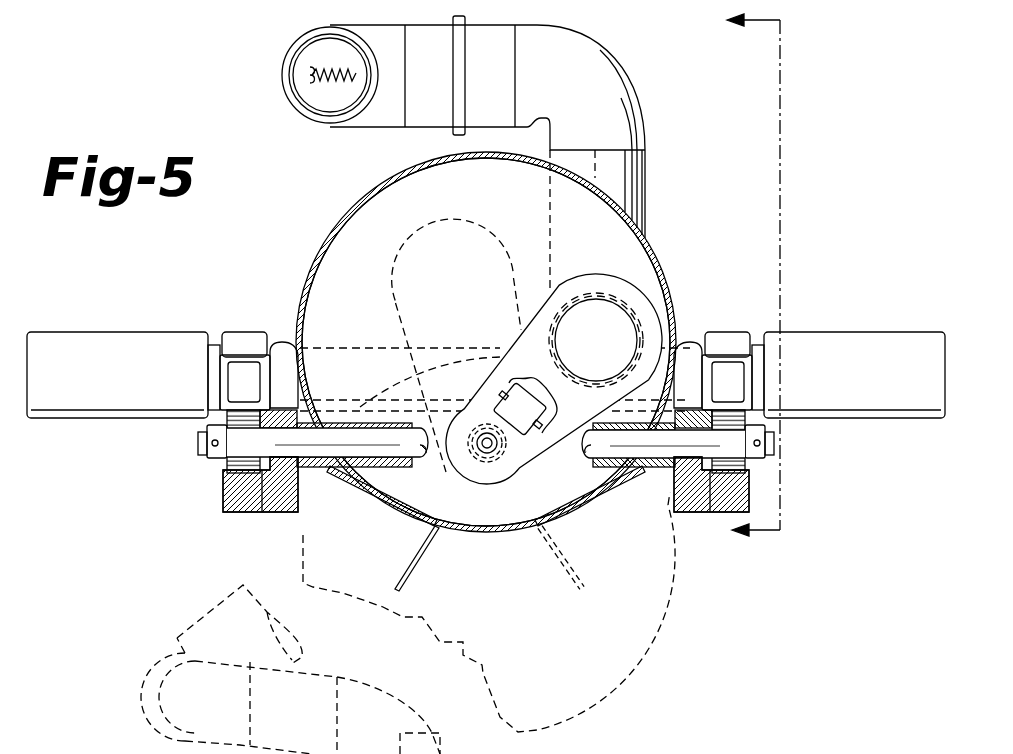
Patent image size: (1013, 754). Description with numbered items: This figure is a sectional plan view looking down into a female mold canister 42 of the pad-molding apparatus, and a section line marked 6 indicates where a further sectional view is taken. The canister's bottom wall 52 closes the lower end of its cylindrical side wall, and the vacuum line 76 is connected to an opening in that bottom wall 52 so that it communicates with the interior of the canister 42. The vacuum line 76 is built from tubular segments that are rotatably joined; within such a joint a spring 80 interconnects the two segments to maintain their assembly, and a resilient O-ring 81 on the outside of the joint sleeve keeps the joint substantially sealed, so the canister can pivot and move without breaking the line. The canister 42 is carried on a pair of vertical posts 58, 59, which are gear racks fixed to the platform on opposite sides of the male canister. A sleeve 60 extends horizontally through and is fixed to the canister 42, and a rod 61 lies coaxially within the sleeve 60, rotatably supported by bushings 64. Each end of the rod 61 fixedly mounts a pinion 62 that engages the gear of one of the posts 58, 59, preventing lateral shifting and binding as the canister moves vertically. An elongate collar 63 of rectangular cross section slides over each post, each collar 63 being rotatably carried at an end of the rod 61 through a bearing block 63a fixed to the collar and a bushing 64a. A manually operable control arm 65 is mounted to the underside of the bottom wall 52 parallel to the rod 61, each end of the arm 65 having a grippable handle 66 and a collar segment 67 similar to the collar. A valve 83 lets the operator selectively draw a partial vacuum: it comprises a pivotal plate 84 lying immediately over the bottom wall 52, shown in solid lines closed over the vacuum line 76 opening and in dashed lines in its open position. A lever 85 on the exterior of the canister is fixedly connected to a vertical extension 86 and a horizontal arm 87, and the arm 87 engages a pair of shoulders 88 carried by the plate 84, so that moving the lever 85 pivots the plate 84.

The section line 6- 6 is at (766, 279).
The female mold canister 42 is at (681, 273).
The bottom wall 52 is at (368, 302).
The vertical post 58 is at (236, 500).
The vertical post 59 is at (700, 514).
The sleeve 60 is at (600, 502).
The rod 61 is at (430, 458).
The pinion 62 is at (216, 450).
The collar 63 is at (250, 514).
The bearing block 63a is at (305, 536).
The bushing 64 is at (352, 421).
The bushing 64a is at (312, 474).
The control arm 65 is at (285, 324).
The handle 66 is at (123, 374).
The collar segment 67 is at (252, 340).
The vacuum line 76 is at (660, 170).
The spring 80 is at (353, 80).
The O-ring 81 is at (466, 60).
The valve 83 is at (535, 300).
The pivotal plate 84 is at (463, 250).
The lever 85 is at (420, 562).
The vertical extension 86 is at (487, 448).
The horizontal arm 87 is at (527, 432).
The shoulders 88 is at (539, 405).